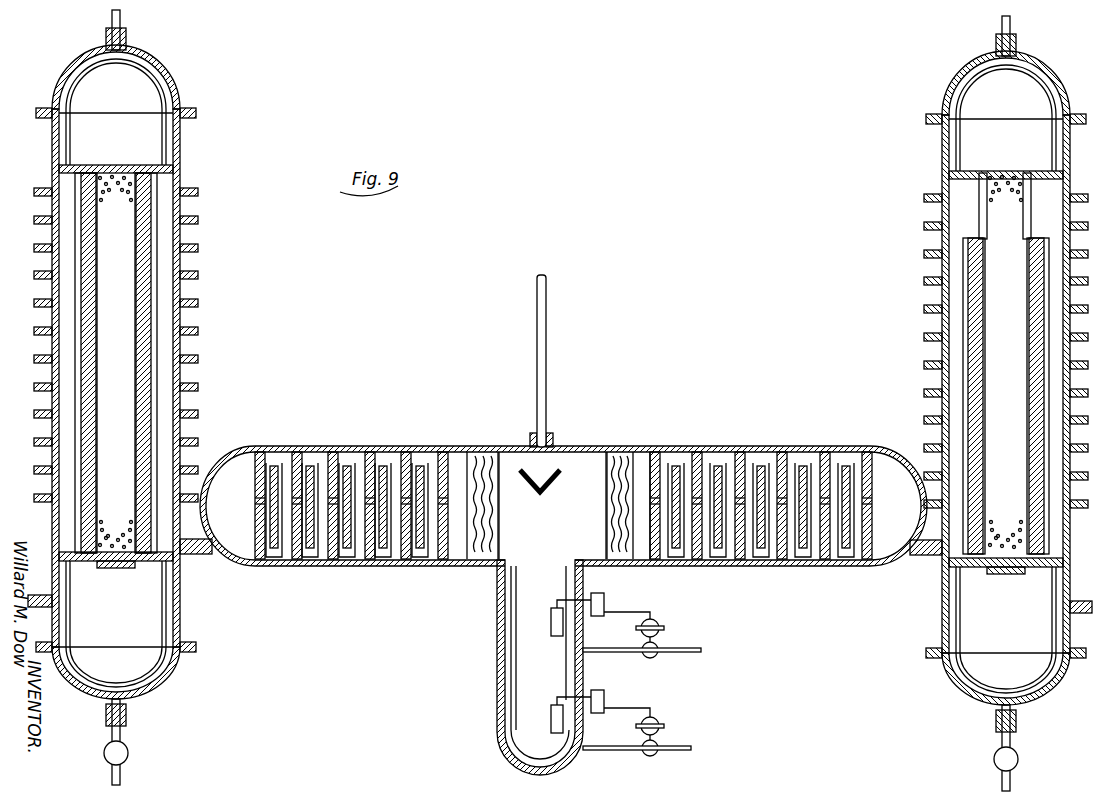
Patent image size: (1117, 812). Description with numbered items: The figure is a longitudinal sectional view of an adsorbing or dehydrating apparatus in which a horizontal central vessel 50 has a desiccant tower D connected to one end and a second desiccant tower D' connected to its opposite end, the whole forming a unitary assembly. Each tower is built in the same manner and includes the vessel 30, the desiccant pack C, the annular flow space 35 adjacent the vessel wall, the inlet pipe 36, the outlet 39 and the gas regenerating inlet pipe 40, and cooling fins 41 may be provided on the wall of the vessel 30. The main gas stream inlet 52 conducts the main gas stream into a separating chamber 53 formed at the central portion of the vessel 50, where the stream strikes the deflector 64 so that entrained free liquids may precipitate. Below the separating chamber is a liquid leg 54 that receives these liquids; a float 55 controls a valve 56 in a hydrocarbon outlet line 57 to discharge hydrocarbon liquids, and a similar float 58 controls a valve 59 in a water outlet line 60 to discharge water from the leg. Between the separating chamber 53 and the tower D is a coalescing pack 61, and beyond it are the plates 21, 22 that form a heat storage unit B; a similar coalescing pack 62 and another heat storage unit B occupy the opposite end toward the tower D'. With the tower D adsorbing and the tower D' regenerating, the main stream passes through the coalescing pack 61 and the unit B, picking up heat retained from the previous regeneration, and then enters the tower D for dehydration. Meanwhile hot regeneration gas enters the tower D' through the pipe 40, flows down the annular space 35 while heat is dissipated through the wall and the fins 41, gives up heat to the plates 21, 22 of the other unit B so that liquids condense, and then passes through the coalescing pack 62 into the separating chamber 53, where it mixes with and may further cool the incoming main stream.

The desiccant tower D is at (138, 87).
The second desiccant tower D' is at (976, 93).
The vessel 30 is at (180, 232).
The cooling fins 41 is at (186, 440).
The annular flow space 35 is at (166, 318).
The desiccant pack C is at (120, 262).
The outlet 39 is at (45, 594).
The inlet pipe 36 is at (205, 556).
The gas regenerating inlet pipe 40 is at (128, 740).
The heat storage unit B is at (400, 448).
The plates 21 is at (300, 452).
The plates 22 is at (352, 465).
The central vessel 50 is at (683, 452).
The coalescing pack 61 is at (482, 452).
The coalescing pack 62 is at (622, 452).
The separating chamber 53 is at (590, 465).
The main gas stream inlet 52 is at (546, 304).
The deflector 64 is at (548, 494).
The liquid leg 54 is at (497, 622).
The float 55 is at (551, 612).
The valve 56 is at (657, 650).
The hydrocarbon outlet line 57 is at (680, 660).
The float 58 is at (551, 712).
The valve 59 is at (657, 748).
The water outlet line 60 is at (672, 756).